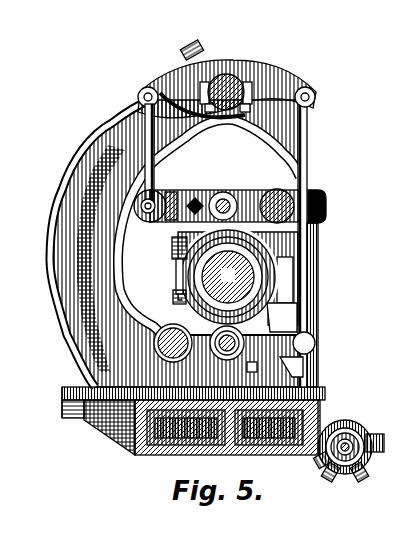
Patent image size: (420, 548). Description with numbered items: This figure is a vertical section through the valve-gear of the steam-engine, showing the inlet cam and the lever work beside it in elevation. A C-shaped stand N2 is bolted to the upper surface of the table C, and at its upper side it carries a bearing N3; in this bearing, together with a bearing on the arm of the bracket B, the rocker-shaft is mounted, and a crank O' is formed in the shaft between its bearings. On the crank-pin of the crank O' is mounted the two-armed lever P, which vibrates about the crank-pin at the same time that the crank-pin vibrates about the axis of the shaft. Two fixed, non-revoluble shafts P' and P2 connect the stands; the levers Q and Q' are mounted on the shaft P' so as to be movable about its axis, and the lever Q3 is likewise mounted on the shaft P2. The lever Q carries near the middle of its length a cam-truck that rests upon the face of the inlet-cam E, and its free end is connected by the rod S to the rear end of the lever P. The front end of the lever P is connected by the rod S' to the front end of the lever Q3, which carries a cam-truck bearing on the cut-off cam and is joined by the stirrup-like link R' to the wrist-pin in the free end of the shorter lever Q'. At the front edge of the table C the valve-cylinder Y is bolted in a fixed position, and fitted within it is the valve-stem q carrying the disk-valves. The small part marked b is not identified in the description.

The stand N2 is at (20, 218).
The bearing N3 is at (186, 70).
The crank O' is at (226, 78).
The two-armed lever P is at (227, 81).
The fixed shaft P' is at (217, 188).
The fixed shaft P2 is at (170, 325).
The rod S is at (129, 154).
The rod S' is at (315, 243).
The lever Q is at (189, 207).
The shorter lever Q' is at (220, 343).
The lever Q3 is at (291, 340).
The stirrup-like link R' is at (170, 270).
The bracket B is at (228, 277).
The inlet-cam E is at (237, 277).
The pin b is at (253, 362).
The table C is at (148, 453).
The valve-cylinder Y is at (350, 425).
The valve-stem q is at (373, 434).